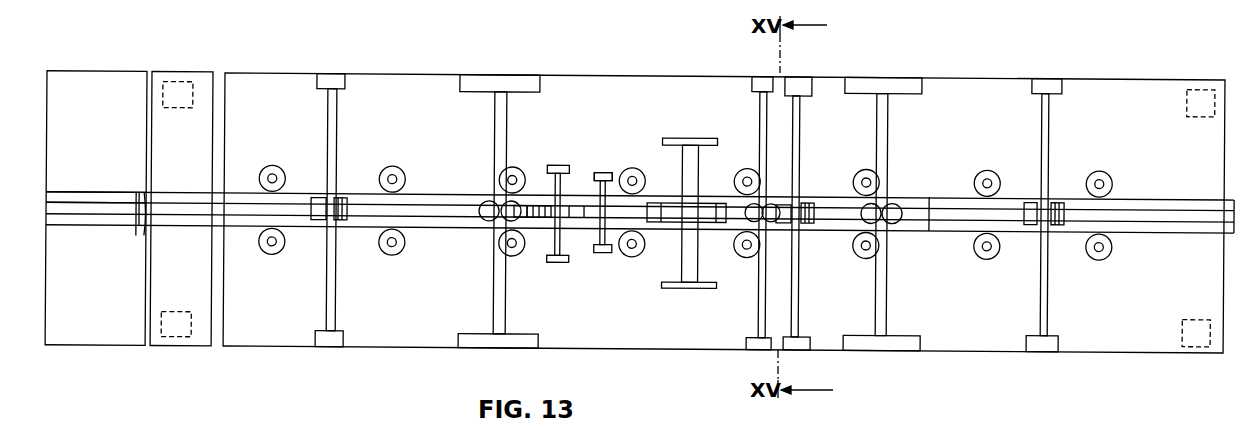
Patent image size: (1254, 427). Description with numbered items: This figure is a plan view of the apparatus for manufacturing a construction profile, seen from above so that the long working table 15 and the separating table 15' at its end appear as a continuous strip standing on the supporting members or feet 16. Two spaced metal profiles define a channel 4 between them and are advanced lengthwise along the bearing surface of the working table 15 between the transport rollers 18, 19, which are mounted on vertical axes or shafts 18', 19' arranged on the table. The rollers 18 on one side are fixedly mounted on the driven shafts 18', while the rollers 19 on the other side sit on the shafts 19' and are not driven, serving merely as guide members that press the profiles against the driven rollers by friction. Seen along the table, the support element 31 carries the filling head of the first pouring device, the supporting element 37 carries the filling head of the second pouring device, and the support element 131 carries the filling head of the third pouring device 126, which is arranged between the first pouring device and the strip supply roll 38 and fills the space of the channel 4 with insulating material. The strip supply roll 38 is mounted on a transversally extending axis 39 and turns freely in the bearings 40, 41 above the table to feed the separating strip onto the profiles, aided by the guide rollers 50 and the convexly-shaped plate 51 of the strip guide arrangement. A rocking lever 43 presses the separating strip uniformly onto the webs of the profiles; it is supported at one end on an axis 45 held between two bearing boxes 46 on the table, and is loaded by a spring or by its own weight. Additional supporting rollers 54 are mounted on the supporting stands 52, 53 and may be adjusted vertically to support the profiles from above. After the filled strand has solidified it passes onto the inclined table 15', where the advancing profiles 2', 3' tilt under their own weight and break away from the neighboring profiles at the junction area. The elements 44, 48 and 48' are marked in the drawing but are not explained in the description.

The advancing metal profile 2' is at (96, 158).
The advancing metal profile 3' is at (96, 202).
The channel 4 is at (186, 192).
The working table 15 is at (724, 234).
The elongated table 15' is at (96, 230).
The supporting members or feet 16 is at (176, 84).
The transport roller 18 is at (686, 158).
The vertical axis or shaft 18' is at (720, 145).
The transport roller 19 is at (668, 267).
The vertical axis or shaft 19' is at (718, 270).
The support element 31 is at (888, 140).
The supporting element 37 is at (498, 97).
The strip supply roll 38 is at (712, 198).
The transversally extending axis 39 is at (683, 253).
The bearing 40 is at (685, 286).
The bearing 41 is at (688, 135).
The rocking lever 43 is at (548, 218).
The sleeve 44 is at (533, 219).
The axis 45 is at (578, 220).
The bearing box 46 is at (560, 163).
The support bracket 48 is at (521, 211).
The support bracket 48' is at (121, 176).
The guide roller 50 is at (606, 250).
The convexly-shaped plate 51 is at (590, 218).
The supporting stand 52 is at (328, 96).
The supporting stand 53 is at (335, 80).
The supporting roller 54 is at (342, 222).
The third pouring device 126 is at (775, 195).
The support element 131 is at (758, 322).